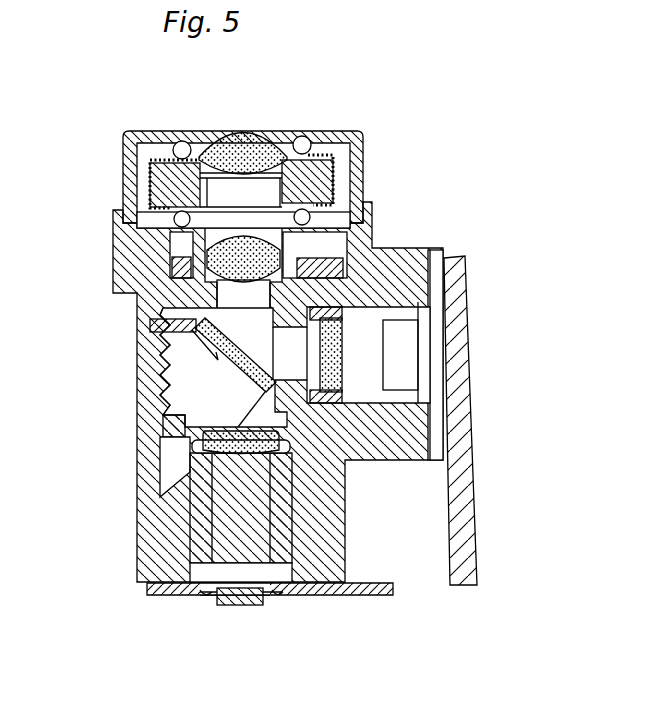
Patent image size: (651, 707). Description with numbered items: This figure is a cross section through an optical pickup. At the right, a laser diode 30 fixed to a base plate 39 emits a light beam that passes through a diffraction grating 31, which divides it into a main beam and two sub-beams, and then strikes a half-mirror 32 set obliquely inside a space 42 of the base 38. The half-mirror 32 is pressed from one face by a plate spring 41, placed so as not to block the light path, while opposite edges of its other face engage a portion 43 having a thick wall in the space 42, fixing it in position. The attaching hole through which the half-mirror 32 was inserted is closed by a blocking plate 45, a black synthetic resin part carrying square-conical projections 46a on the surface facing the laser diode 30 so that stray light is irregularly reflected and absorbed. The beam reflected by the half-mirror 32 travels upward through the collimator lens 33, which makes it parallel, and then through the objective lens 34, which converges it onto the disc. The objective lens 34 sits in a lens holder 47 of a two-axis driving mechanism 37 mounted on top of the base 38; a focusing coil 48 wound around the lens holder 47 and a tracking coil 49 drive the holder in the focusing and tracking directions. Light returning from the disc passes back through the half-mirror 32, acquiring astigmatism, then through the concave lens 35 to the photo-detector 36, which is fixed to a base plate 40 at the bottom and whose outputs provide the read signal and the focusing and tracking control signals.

The laser diode 30 is at (415, 463).
The diffraction grating 31 is at (357, 463).
The half-mirror 32 is at (262, 382).
The collimator lens 33 is at (223, 260).
The objective lens 34 is at (225, 133).
The concave lens 35 is at (200, 442).
The photo-detector 36 is at (227, 600).
The two-axis driving mechanism 37 is at (362, 188).
The base 38 is at (383, 258).
The base plate 39 is at (460, 483).
The base plate 40 is at (363, 592).
The plate spring 41 is at (140, 340).
The space 42 is at (207, 378).
The portion having a thick wall 43 is at (265, 342).
The blocking plate 45 is at (145, 428).
The projections 46a is at (162, 368).
The lens holder 47 is at (302, 138).
The focusing coil 48 is at (147, 178).
The tracking coil 49 is at (153, 160).